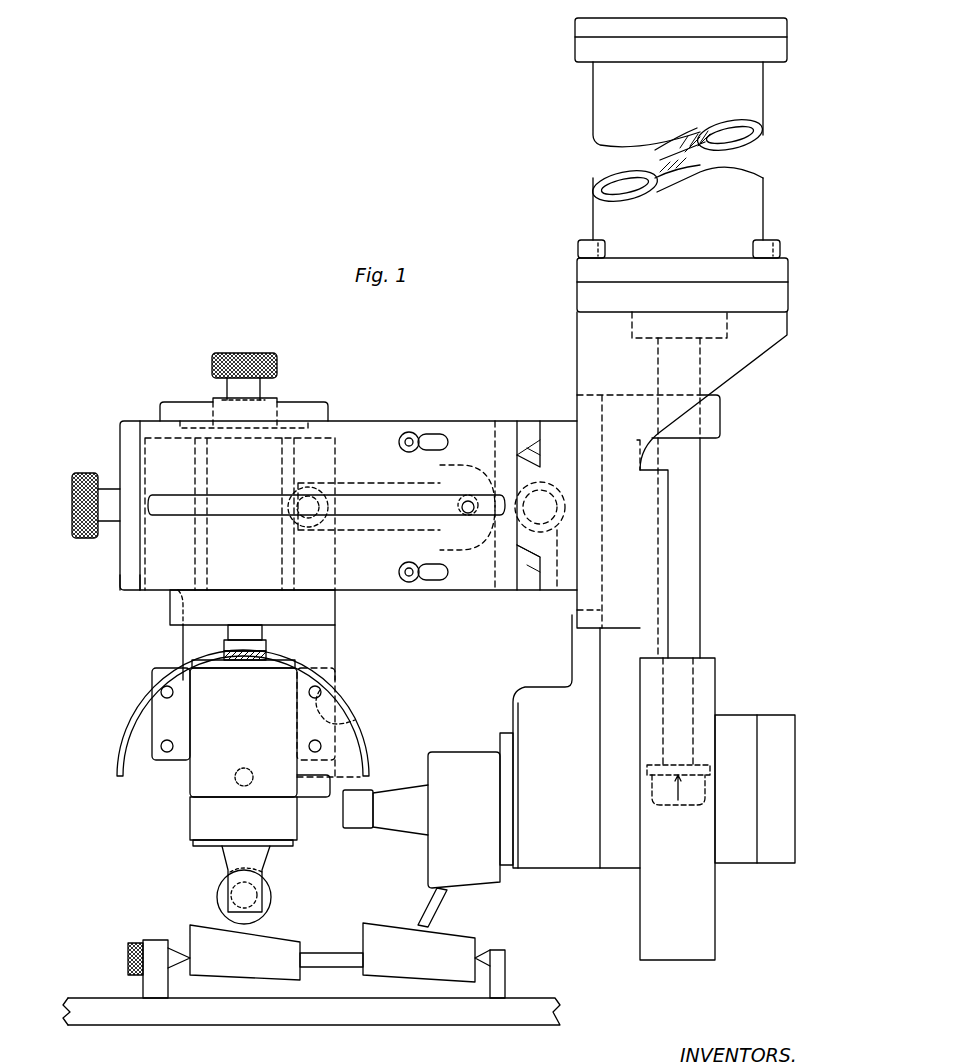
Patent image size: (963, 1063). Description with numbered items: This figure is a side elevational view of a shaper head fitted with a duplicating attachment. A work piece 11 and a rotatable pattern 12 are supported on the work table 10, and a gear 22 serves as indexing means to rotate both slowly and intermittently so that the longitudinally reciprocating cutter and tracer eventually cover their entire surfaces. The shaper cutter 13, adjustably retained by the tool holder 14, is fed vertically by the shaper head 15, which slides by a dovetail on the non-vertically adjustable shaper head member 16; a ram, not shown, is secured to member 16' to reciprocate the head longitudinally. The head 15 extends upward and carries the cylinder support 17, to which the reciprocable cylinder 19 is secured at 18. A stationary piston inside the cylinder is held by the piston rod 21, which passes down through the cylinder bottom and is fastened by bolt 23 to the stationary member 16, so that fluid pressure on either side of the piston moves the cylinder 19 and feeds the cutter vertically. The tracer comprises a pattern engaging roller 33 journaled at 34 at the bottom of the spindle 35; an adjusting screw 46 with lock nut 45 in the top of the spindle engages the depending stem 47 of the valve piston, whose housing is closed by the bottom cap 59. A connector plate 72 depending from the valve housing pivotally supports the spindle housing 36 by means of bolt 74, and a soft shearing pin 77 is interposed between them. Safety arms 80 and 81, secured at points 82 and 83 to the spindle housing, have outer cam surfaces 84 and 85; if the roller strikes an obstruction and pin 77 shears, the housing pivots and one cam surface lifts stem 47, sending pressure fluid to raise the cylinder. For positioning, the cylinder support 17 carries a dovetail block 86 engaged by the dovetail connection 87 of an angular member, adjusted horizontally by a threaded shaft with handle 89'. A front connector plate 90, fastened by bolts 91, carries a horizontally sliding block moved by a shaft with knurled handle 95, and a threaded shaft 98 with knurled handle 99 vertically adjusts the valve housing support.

The work table 10 is at (500, 1013).
The work piece 11 is at (425, 968).
The rotatable pattern 12 is at (240, 970).
The shaper cutter 13 is at (428, 900).
The tool holder 14 is at (413, 825).
The shaper head 15 is at (722, 415).
The non-vertically adjustable shaper head member 16 is at (661, 809).
The ram-secured member 16' is at (755, 805).
The cylinder support 17 is at (582, 340).
The cylinder securing point 18 is at (580, 250).
The reciprocable cylinder 19 is at (608, 100).
The piston rod 21 is at (690, 138).
The gear 22 is at (130, 952).
The bolt 23 is at (690, 803).
The pattern engaging roller 33 is at (218, 897).
The journal 34 is at (250, 897).
The spindle 35 is at (225, 852).
The spindle housing 36 is at (197, 818).
The lock nut 45 is at (222, 654).
The adjusting screw 46 is at (266, 645).
The depending stem 47 is at (228, 632).
The bottom cap 59 is at (168, 602).
The connector plate 72 is at (325, 608).
The bolt 74 is at (235, 778).
The shearing pin 77 is at (360, 696).
The safety arm 80 is at (140, 774).
The safety arm 81 is at (348, 756).
The securing point 82 is at (162, 690).
The securing point 83 is at (321, 690).
The cam surface 84 is at (140, 700).
The cam surface 85 is at (355, 725).
The dovetail block 86 is at (560, 432).
The dovetail connection 87 is at (525, 432).
The handle 89' is at (552, 575).
The front connector plate 90 is at (378, 430).
The bolts 91 is at (410, 435).
The knurled handle 95 is at (75, 510).
The threaded shaft 98 is at (256, 395).
The knurled handle 99 is at (218, 352).